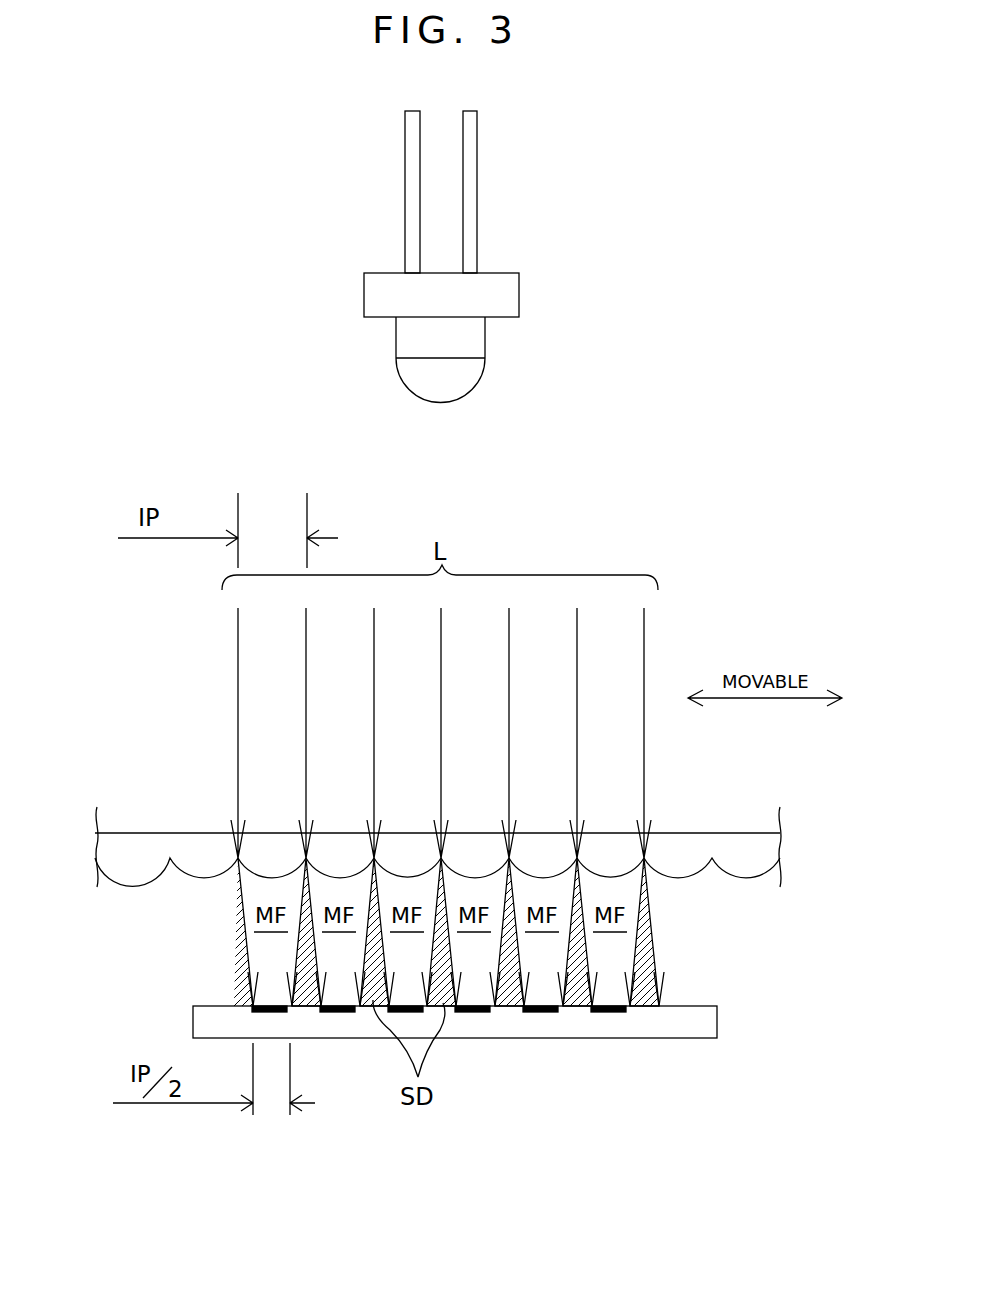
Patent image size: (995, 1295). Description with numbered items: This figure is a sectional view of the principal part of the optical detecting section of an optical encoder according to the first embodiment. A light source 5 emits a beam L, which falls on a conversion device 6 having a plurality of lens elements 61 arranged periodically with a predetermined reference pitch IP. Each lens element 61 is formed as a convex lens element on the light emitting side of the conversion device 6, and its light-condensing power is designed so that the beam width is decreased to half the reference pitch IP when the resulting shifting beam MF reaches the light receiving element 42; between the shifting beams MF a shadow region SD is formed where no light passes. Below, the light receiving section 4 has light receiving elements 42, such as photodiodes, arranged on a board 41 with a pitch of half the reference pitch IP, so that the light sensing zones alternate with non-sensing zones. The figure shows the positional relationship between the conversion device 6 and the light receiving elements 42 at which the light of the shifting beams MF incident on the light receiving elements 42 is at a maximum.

The light receiving section 4 is at (495, 1069).
The light source 5 is at (475, 338).
The conversion device 6 is at (438, 849).
The board 41 is at (704, 1023).
The light receiving element 42 is at (339, 1012).
The lens element 61 is at (264, 893).